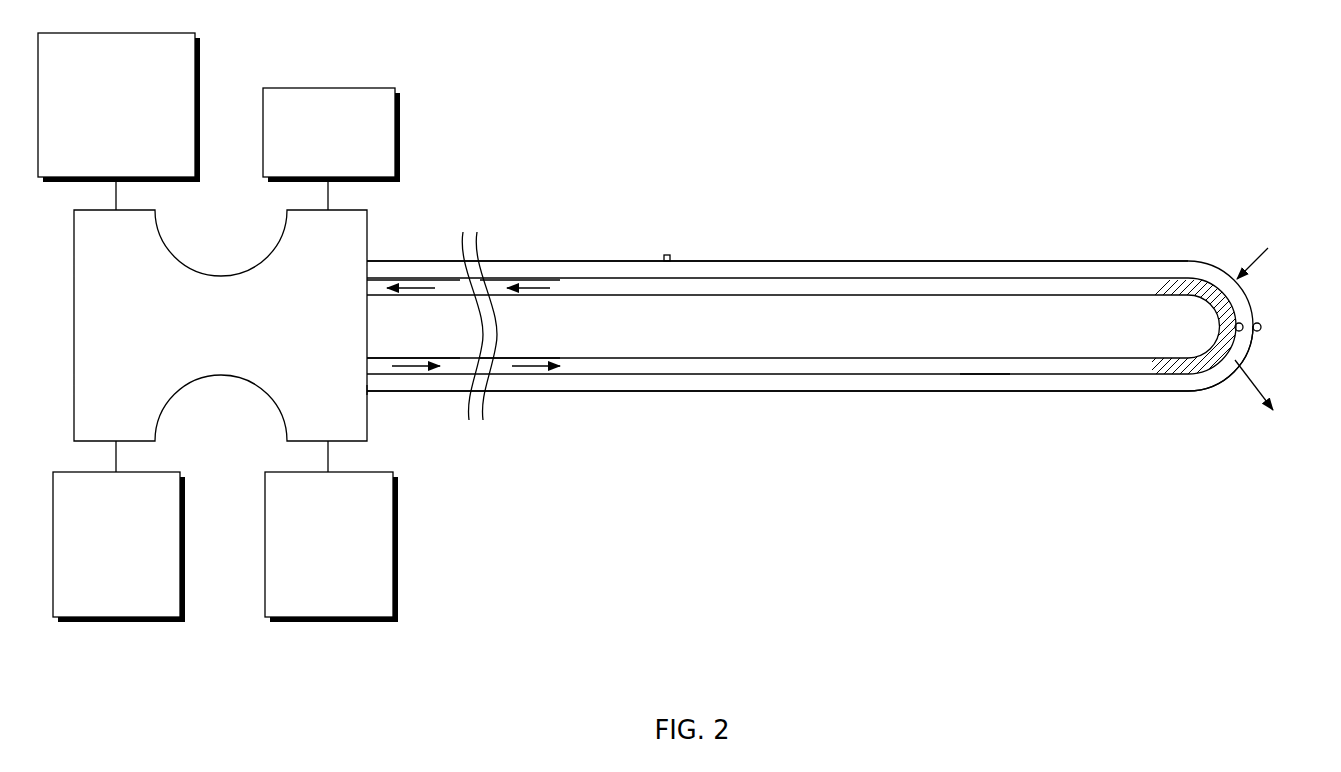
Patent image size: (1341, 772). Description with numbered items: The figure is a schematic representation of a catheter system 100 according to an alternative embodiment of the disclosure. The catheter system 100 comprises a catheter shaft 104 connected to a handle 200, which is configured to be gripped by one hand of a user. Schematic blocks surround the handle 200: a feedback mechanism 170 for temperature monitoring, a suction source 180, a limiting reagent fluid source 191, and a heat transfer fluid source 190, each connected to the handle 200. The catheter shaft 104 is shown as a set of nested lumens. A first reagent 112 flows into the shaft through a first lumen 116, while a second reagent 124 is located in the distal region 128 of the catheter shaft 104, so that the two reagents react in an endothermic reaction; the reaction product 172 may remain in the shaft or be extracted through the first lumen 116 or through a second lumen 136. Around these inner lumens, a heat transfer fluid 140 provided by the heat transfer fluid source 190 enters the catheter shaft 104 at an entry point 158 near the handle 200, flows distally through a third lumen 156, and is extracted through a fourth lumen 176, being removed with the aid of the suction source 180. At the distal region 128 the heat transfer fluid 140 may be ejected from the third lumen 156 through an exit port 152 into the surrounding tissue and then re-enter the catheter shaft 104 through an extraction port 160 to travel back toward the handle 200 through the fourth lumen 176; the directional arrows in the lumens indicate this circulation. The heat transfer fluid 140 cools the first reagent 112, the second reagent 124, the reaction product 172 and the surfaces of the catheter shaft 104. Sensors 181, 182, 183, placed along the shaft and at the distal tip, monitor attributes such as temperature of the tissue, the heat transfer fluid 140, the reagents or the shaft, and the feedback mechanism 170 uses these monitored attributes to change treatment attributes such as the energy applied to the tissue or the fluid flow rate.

The catheter system 100 is at (978, 236).
The catheter shaft 104 is at (860, 392).
The first reagent 112 is at (1189, 290).
The first lumen 116 is at (974, 368).
The second reagent 124 is at (545, 368).
The distal region 128 is at (1178, 392).
The second lumen 136 is at (821, 290).
The heat transfer fluid 140 is at (1077, 384).
The exit port 152 is at (1253, 382).
The third lumen 156 is at (718, 387).
The entry point 158 is at (368, 392).
The extraction port 160 is at (1250, 283).
The feedback mechanism 170 is at (100, 169).
The reaction product 172 is at (530, 287).
The fourth lumen 176 is at (727, 268).
The suction source 180 is at (345, 171).
The sensor 181 is at (1262, 326).
The sensor 182 is at (1235, 326).
The sensor 183 is at (672, 256).
The heat transfer fluid source 190 is at (345, 612).
The limiting reagent fluid source 191 is at (132, 612).
The handle 200 is at (196, 272).